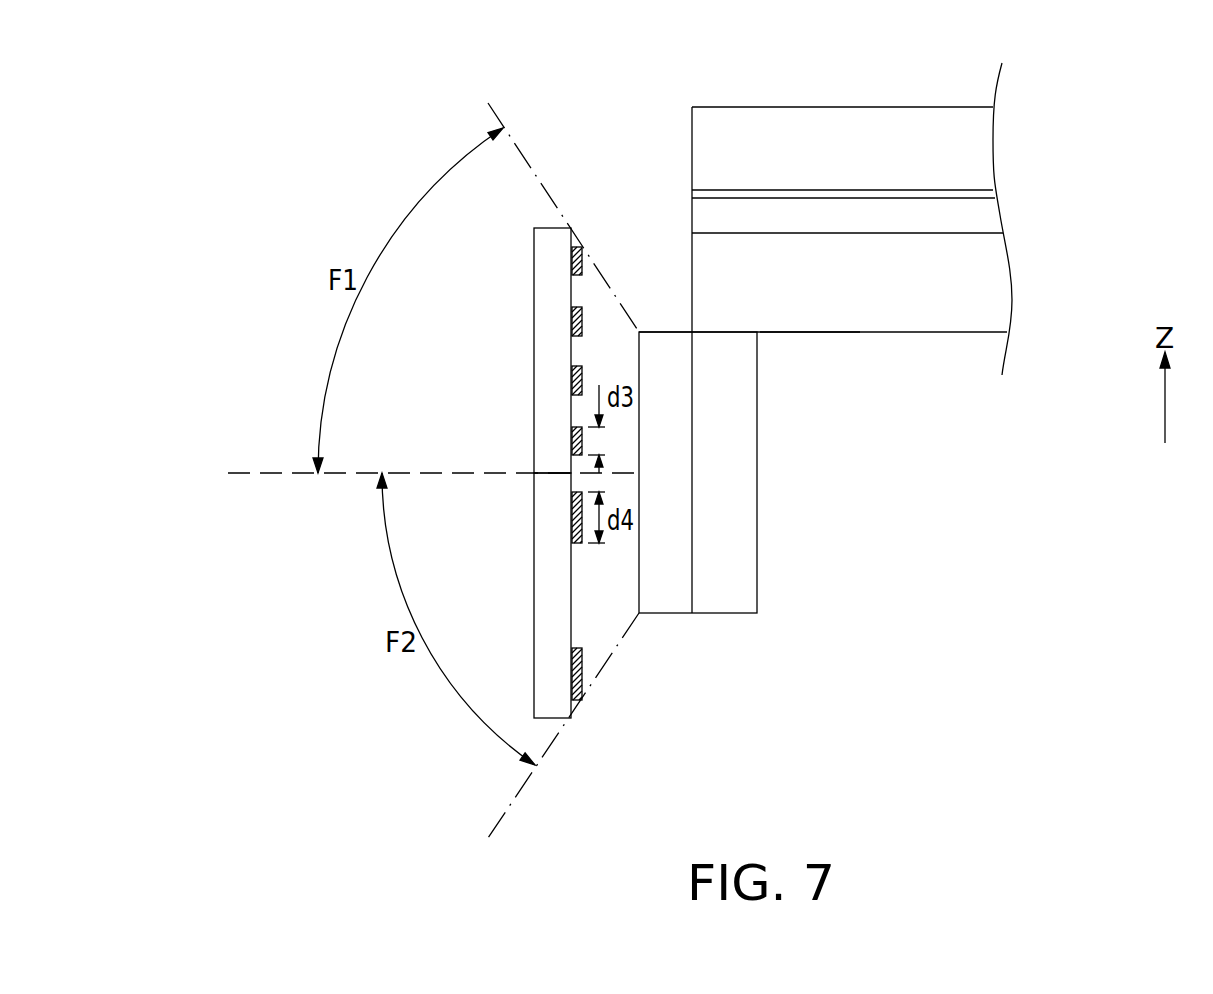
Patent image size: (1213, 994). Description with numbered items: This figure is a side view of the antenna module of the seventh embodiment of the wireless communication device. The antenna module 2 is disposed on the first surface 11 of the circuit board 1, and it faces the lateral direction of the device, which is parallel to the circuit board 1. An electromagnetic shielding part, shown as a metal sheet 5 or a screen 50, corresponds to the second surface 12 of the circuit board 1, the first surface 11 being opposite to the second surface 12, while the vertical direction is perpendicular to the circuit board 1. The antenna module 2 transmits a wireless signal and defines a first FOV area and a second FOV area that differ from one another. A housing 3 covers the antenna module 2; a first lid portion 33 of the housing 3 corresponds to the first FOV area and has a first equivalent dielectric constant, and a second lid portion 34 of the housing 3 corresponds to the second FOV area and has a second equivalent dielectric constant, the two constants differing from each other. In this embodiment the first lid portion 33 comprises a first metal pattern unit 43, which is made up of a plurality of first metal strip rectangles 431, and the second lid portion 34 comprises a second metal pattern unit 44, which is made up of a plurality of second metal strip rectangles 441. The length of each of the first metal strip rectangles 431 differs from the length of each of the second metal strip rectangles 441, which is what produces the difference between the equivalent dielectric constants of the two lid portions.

The circuit board 1 is at (825, 328).
The first surface 11 is at (807, 332).
The second surface 12 is at (940, 233).
The metal sheet 5 is at (868, 195).
The screen 50 is at (805, 120).
The antenna module 2 is at (668, 616).
The housing 3 is at (511, 529).
The first lid portion 33 is at (548, 372).
The second lid portion 34 is at (548, 670).
The first metal pattern unit 43 is at (492, 351).
The first metal strip rectangles 431 is at (571, 258).
The second metal pattern unit 44 is at (492, 596).
The second metal strip rectangles 441 is at (571, 516).